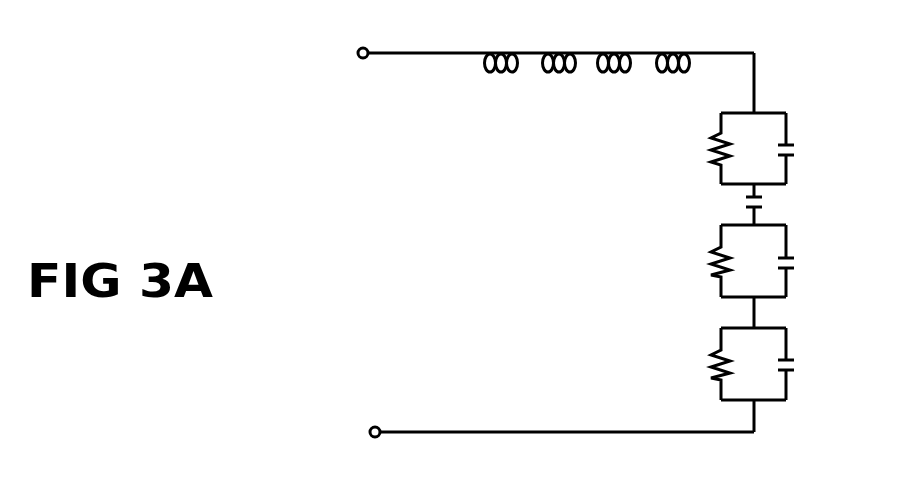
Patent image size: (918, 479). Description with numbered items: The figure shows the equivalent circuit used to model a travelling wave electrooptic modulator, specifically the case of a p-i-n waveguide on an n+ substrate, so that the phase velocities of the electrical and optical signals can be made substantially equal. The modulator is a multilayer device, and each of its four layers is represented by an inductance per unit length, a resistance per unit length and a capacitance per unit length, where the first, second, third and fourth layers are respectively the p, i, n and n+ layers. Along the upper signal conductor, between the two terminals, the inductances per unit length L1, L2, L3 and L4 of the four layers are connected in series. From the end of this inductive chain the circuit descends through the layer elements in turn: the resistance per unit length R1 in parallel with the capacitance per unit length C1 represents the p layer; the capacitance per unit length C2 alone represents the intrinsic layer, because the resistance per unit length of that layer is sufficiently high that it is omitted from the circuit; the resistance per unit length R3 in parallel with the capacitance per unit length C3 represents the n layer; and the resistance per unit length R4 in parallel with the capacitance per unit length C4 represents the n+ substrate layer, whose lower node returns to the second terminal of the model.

The inductance per unit length of the first layer L1 is at (500, 46).
The inductance per unit length of the second layer L2 is at (554, 46).
The inductance per unit length of the third layer L3 is at (611, 46).
The inductance per unit length of the fourth layer L4 is at (673, 46).
The resistance per unit length of the first layer R1 is at (695, 148).
The capacitance per unit length of the first layer C1 is at (809, 148).
The capacitance per unit length of the second layer C2 is at (778, 205).
The resistance per unit length of the third layer R3 is at (695, 261).
The capacitance per unit length of the third layer C3 is at (809, 261).
The resistance per unit length of the fourth layer R4 is at (699, 364).
The capacitance per unit length of the fourth layer C4 is at (808, 364).